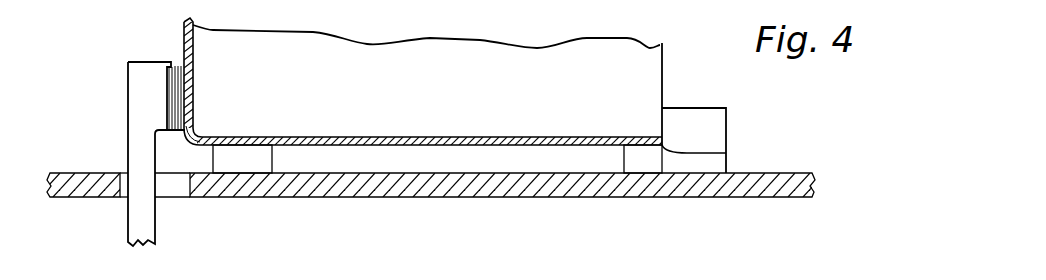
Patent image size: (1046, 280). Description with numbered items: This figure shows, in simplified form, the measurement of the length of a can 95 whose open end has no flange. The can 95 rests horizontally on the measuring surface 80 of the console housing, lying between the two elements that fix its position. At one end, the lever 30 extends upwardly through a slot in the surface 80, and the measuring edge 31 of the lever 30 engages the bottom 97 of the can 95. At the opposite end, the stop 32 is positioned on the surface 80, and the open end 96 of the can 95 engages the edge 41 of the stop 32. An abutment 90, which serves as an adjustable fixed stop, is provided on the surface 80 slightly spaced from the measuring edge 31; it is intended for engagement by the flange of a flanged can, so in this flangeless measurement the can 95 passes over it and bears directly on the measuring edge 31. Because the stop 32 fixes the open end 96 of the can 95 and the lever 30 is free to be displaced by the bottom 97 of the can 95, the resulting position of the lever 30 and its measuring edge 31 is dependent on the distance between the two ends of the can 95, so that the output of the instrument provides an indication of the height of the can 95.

The lever 30 is at (133, 210).
The measuring edge 31 is at (196, 90).
The stop 32 is at (728, 130).
The edge of the stop 41 is at (662, 117).
The measuring surface 80 is at (73, 173).
The abutment 90 is at (243, 157).
The can 95 is at (503, 136).
The open end of the can 96 is at (728, 152).
The bottom of the can 97 is at (198, 117).